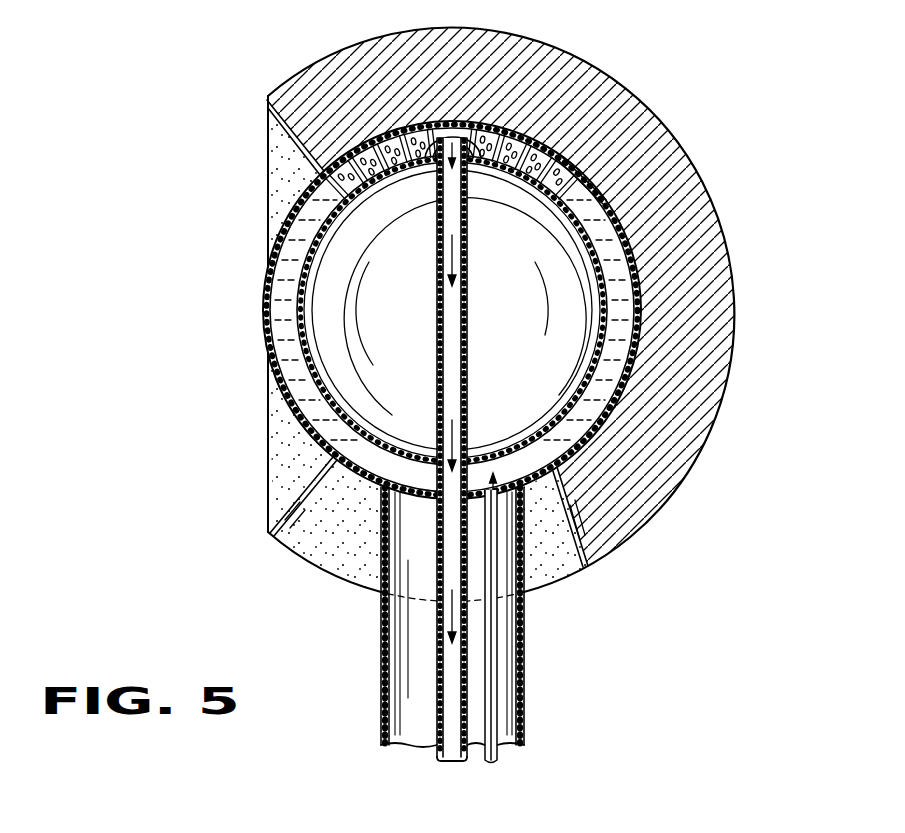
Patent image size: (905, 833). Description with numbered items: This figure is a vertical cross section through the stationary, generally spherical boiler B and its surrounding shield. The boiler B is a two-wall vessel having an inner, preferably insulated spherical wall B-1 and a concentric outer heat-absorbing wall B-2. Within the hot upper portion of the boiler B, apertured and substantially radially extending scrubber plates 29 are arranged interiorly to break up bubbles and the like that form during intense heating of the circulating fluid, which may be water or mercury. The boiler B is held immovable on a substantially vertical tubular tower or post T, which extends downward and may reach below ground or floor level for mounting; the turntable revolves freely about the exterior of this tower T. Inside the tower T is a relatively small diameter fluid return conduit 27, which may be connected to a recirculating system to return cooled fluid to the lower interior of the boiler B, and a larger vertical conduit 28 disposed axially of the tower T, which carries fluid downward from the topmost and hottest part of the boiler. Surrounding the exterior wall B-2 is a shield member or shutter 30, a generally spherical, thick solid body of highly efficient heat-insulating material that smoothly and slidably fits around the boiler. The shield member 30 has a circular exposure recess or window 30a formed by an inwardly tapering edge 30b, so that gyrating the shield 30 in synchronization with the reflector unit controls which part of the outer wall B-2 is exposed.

The shield member 30 is at (712, 170).
The exposure recess 30a is at (292, 168).
The inwardly tapering edge 30b is at (292, 132).
The scrubber plates 29 is at (547, 165).
The vertical conduit 28 is at (468, 392).
The fluid return conduit 27 is at (502, 657).
The boiler B is at (233, 312).
The inner spherical wall B-1 is at (335, 418).
The outer heat-absorbing wall B-2 is at (278, 390).
The tubular tower T is at (525, 708).